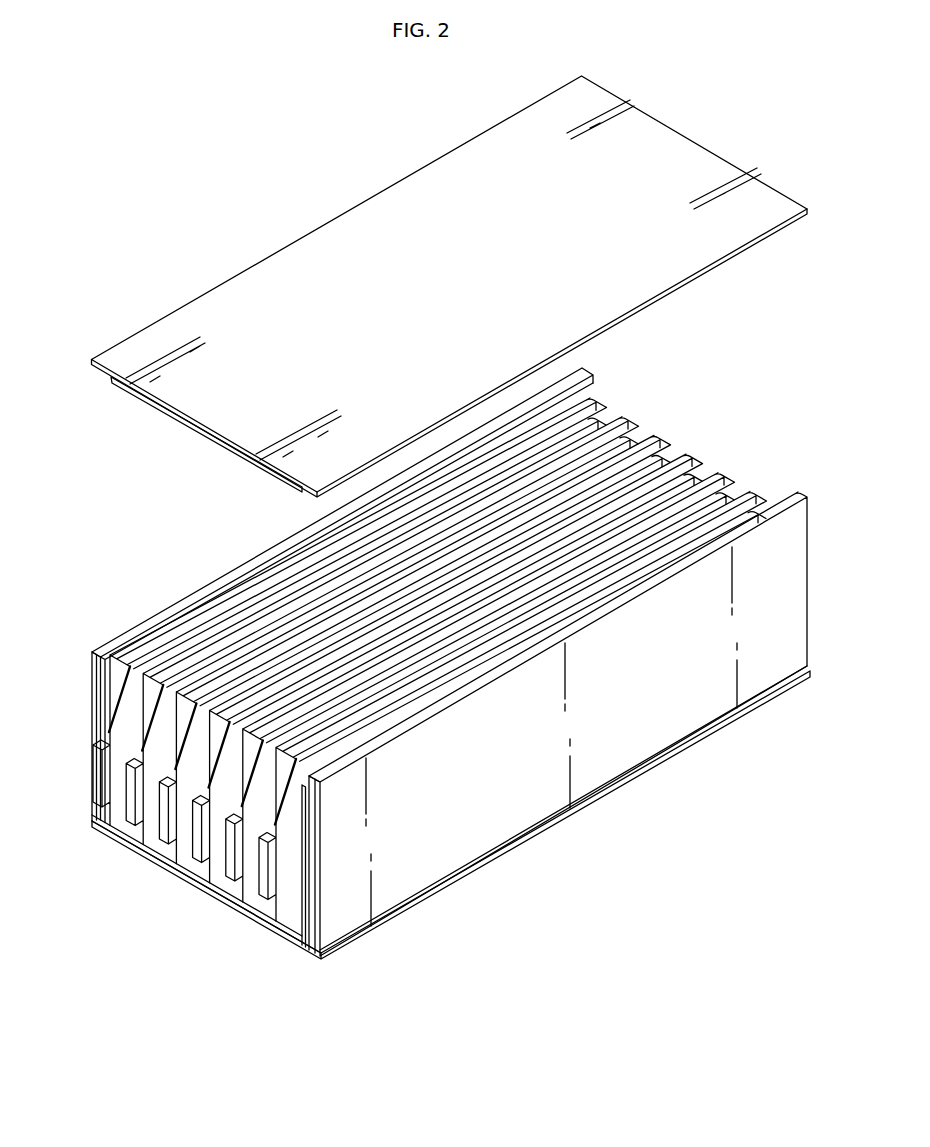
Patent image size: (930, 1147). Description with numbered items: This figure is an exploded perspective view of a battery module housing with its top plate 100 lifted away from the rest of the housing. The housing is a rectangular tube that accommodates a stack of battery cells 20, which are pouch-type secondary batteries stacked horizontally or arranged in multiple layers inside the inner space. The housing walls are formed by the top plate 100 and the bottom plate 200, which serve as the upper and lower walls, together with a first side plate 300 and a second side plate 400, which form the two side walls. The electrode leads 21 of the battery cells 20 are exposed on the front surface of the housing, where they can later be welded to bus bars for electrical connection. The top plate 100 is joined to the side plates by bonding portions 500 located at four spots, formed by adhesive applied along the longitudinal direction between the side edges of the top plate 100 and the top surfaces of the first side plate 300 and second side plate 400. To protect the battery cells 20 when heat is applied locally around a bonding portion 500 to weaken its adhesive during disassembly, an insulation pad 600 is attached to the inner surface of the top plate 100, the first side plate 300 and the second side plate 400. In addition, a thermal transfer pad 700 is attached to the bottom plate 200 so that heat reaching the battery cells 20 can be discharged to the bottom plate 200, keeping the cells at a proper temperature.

The battery cells 20 is at (410, 657).
The electrode leads 21 is at (133, 797).
The top plate 100 is at (426, 190).
The bottom plate 200 is at (228, 909).
The first side plate 300 is at (434, 845).
The second side plate 400 is at (92, 695).
The bonding portions 500 is at (92, 653).
The insulation pad 600 is at (127, 392).
The thermal transfer pad 700 is at (203, 873).